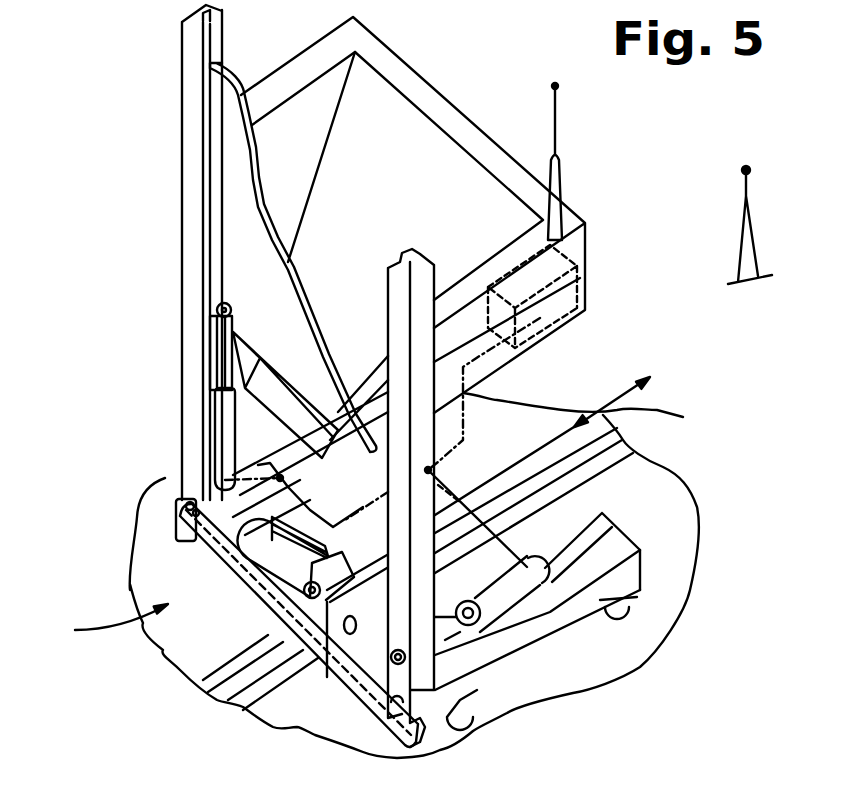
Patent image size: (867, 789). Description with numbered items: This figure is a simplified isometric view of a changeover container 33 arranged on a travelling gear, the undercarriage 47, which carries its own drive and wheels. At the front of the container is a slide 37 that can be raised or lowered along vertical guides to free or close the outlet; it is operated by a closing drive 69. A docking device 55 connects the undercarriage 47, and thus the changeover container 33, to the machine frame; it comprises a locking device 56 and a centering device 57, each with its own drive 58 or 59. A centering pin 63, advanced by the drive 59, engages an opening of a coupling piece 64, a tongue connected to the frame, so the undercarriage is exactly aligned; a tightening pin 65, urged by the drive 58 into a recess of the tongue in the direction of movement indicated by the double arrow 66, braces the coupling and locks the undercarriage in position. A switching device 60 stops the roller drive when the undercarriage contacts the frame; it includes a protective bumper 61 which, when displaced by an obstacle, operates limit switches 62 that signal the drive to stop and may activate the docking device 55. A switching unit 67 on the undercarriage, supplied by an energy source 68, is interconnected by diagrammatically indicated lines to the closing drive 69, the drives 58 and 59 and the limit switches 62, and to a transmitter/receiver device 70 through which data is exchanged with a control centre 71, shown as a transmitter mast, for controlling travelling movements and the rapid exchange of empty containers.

The changeover container 33 is at (503, 115).
The slide 37 is at (226, 218).
The undercarriage 47 is at (655, 574).
The docking device 55 is at (267, 632).
The locking device 56 is at (252, 557).
The centering device 57 is at (518, 608).
The drive 58 is at (185, 545).
The drive 59 is at (497, 620).
The switching device 60 is at (108, 625).
The protective bumper 61 is at (180, 512).
The limit switches 62 is at (178, 510).
The centering pin 63 is at (460, 633).
The coupling piece 64 is at (343, 628).
The tightening pin 65 is at (280, 612).
The double arrow 66 is at (583, 405).
The switching unit 67 is at (275, 490).
The energy source 68 is at (603, 527).
The closing drive 69 is at (223, 438).
The transmitter/receiver device 70 is at (596, 262).
The control centre 71 is at (753, 275).